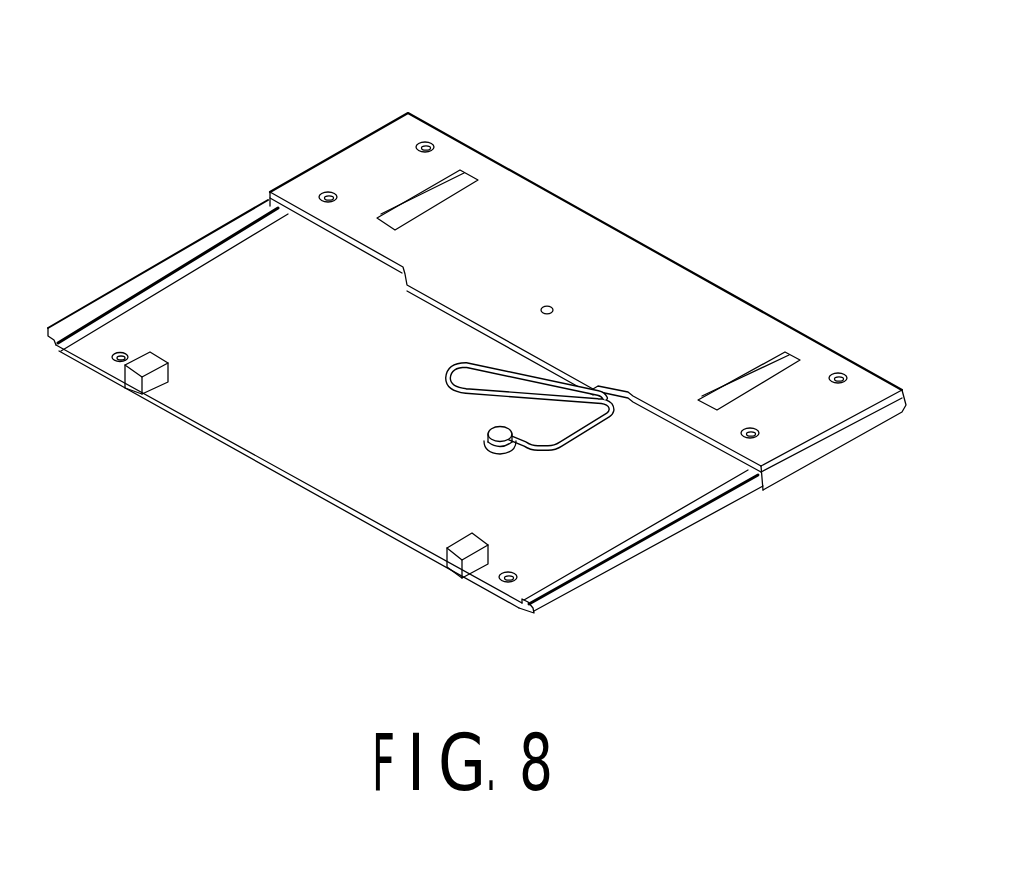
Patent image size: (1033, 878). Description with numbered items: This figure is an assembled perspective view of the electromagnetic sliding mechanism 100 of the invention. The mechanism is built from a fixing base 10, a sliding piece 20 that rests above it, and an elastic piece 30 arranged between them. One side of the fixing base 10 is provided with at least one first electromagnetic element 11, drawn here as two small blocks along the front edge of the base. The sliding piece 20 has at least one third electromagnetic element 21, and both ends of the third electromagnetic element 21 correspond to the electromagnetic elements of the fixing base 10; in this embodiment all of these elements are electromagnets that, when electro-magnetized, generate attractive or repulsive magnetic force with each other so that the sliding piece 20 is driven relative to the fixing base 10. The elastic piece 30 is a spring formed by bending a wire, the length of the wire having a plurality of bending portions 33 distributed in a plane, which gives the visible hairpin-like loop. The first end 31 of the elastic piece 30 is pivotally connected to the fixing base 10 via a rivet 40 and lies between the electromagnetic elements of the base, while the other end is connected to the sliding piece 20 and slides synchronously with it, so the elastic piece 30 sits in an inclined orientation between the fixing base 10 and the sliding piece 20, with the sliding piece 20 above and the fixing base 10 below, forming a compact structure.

The electromagnetic sliding mechanism 100 is at (918, 173).
The fixing base 10 is at (120, 289).
The first electromagnetic element 11 is at (150, 380).
The sliding piece 20 is at (372, 128).
The third electromagnetic element 21 is at (461, 177).
The elastic piece 30 is at (453, 391).
The first end 31 is at (492, 446).
The bending portions 33 is at (462, 370).
The rivet 40 is at (500, 456).